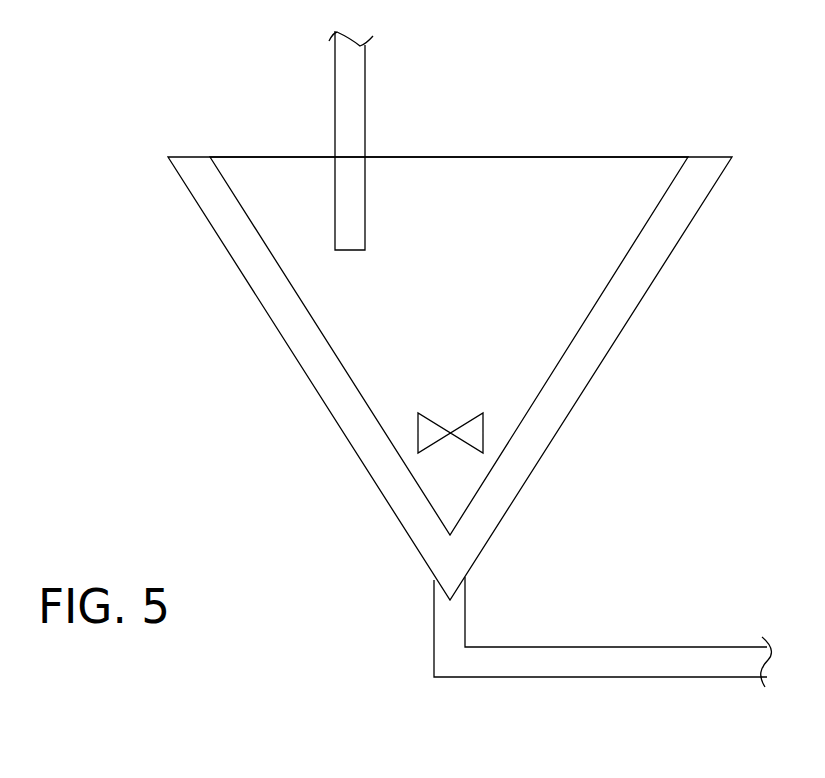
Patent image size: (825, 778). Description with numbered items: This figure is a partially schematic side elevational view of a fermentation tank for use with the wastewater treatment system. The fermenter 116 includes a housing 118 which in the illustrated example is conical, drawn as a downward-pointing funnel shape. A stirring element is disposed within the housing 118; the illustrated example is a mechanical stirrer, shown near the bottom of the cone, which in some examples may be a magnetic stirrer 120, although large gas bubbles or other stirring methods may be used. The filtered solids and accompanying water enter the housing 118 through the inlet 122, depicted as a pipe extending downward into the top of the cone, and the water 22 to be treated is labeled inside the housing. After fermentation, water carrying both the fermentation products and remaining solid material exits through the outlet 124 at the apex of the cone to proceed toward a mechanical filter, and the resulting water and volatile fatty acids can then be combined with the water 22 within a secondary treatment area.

The water 22 is at (536, 278).
The fermenter 116 is at (244, 328).
The housing 118 is at (603, 358).
The magnetic stirrer 120 is at (484, 417).
The inlet 122 is at (365, 193).
The outlet 124 is at (632, 647).